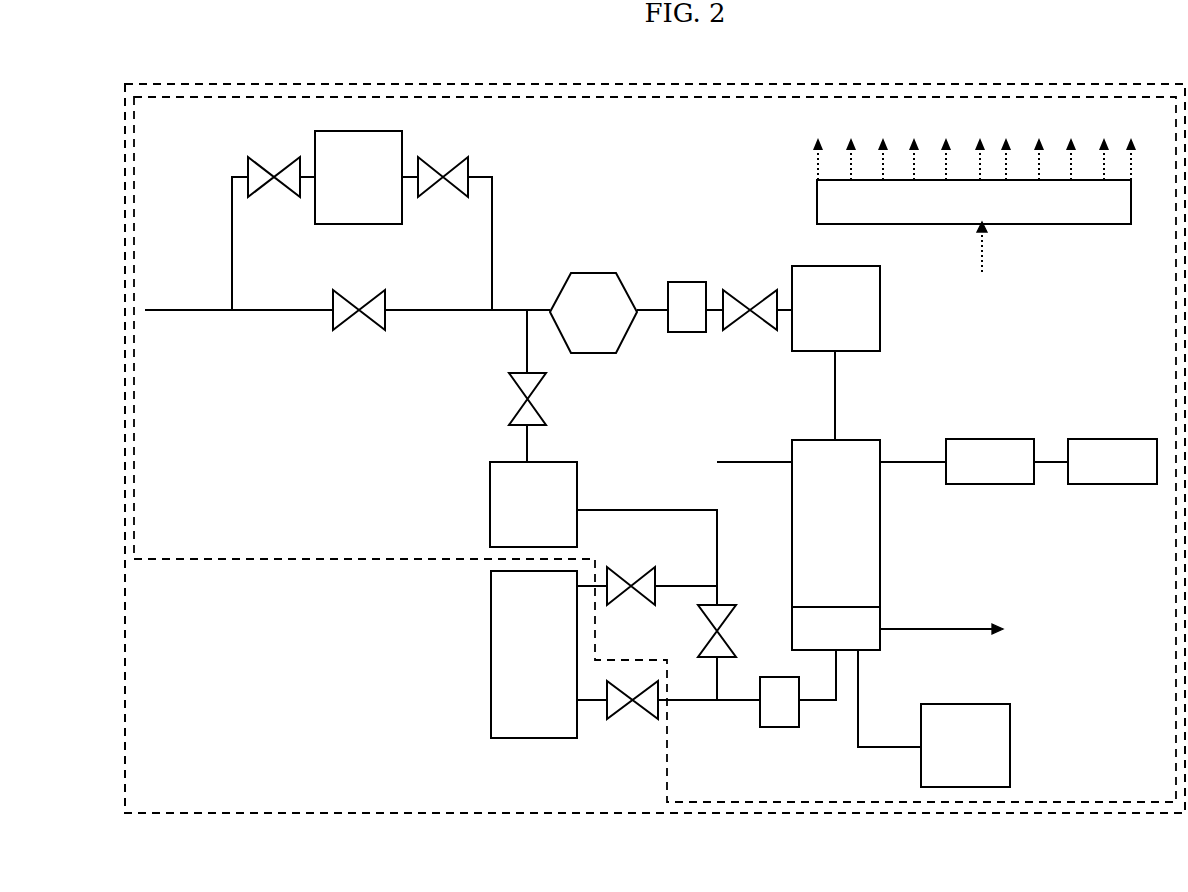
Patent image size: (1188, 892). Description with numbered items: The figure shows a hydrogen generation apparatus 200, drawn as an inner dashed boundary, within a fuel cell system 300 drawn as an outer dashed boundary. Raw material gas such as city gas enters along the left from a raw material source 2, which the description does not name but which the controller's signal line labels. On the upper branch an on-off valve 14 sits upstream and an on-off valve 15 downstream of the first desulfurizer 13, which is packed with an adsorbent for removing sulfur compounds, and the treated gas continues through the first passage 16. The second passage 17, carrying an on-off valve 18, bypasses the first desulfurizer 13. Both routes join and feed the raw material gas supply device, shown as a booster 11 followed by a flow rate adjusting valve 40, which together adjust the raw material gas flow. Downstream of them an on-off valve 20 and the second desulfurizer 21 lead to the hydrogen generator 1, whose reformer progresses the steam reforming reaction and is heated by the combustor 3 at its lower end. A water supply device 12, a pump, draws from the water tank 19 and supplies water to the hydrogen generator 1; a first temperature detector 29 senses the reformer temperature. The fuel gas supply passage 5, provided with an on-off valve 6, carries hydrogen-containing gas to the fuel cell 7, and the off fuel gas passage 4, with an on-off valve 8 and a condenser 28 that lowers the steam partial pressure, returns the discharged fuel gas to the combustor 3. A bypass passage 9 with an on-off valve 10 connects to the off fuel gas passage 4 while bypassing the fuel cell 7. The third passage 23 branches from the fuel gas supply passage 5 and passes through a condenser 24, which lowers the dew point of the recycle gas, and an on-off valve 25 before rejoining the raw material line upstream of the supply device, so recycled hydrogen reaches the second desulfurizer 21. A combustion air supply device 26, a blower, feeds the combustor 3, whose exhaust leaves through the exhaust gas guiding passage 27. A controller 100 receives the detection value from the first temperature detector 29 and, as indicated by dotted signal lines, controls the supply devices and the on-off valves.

The hydrogen generator 1 is at (836, 545).
The fuel supply device 2 is at (818, 146).
The combustor 3 is at (836, 626).
The off fuel gas passage 4 is at (826, 712).
The fuel gas supply passage 5 is at (668, 582).
The on-off valve 6 is at (612, 574).
The fuel cell 7 is at (534, 654).
The on-off valve 8 is at (647, 713).
The bypass passage 9 is at (710, 690).
The on-off valve 10 is at (707, 618).
The booster 11 is at (609, 313).
The water supply device 12 is at (974, 461).
The first desulfurizer 13 is at (358, 177).
The on-off valve 14 is at (253, 158).
The on-off valve 15 is at (428, 160).
The first passage 16 is at (492, 232).
The second passage 17 is at (277, 310).
The on-off valve 18 is at (353, 316).
The water tank 19 is at (1112, 461).
The on-off valve 20 is at (760, 318).
The second desulfurizer 21 is at (836, 353).
The third passage 23 is at (637, 508).
The condenser 24 is at (533, 504).
The on-off valve 25 is at (540, 407).
The combustion air supply device 26 is at (934, 718).
The exhaust gas guiding passage 27 is at (928, 647).
The condenser 28 is at (779, 702).
The first temperature detector 29 is at (764, 598).
The flow rate adjusting valve 40 is at (695, 307).
The controller 100 is at (978, 168).
The hydrogen generation apparatus 200 is at (688, 98).
The fuel cell system 300 is at (687, 73).